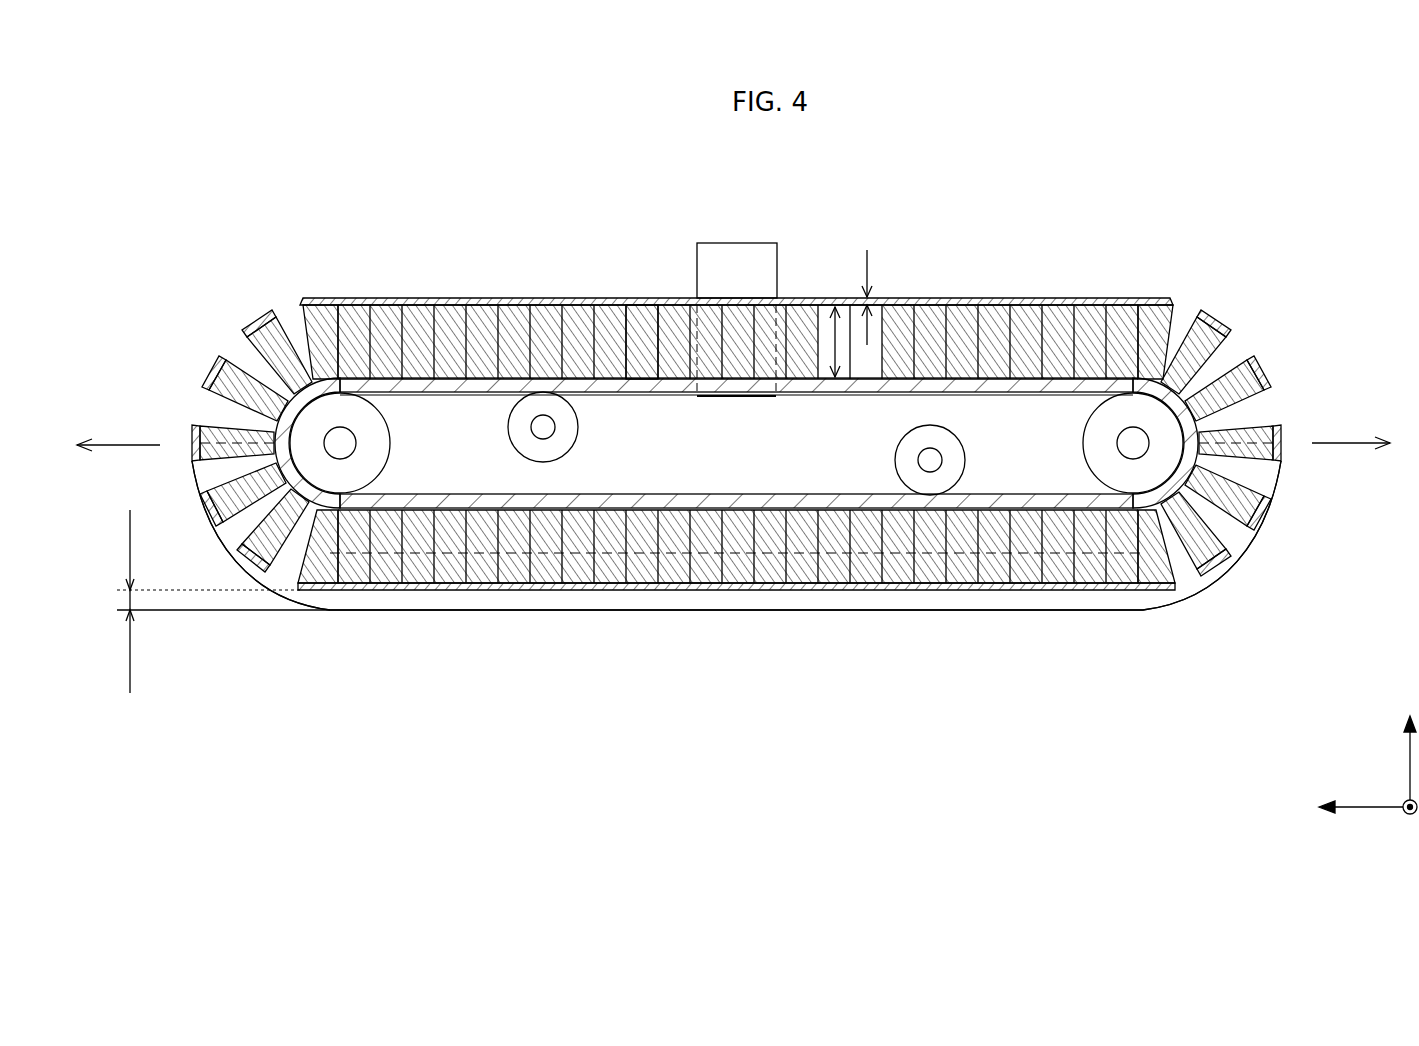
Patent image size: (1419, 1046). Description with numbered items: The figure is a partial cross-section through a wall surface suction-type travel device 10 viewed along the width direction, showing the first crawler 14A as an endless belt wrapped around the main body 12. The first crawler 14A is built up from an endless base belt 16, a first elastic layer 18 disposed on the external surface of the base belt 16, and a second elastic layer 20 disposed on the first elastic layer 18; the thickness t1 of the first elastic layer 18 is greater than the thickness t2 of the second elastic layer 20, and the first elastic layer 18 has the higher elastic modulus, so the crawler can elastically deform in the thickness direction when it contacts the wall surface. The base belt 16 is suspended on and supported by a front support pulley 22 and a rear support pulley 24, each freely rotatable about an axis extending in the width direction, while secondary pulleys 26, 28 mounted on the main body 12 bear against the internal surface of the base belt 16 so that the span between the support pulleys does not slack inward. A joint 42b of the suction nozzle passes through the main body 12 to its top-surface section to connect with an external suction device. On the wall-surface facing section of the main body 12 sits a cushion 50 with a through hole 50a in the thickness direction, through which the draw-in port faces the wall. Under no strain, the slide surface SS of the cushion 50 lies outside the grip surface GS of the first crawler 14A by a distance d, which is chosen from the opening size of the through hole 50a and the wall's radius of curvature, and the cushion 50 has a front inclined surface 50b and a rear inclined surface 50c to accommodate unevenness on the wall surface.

The wall surface suction-type travel device 10 is at (212, 240).
The main body 12 is at (437, 432).
The first crawler 14A is at (548, 297).
The base belt 16 is at (637, 380).
The first elastic layer 18 is at (634, 352).
The second elastic layer 20 is at (643, 297).
The front support pulley 22 is at (370, 455).
The rear support pulley 24 is at (1095, 447).
The secondary pulley 26 is at (514, 411).
The secondary pulley 28 is at (900, 445).
The joint 42b is at (745, 243).
The cushion 50 is at (930, 595).
The through hole 50a is at (800, 600).
The front inclined surface 50b is at (230, 535).
The rear inclined surface 50c is at (1250, 540).
The thickness of first elastic layer t1 is at (833, 350).
The thickness of second elastic layer t2 is at (867, 250).
The distance d is at (212, 601).
The grip surface GS is at (453, 592).
The slide surface SS is at (600, 612).